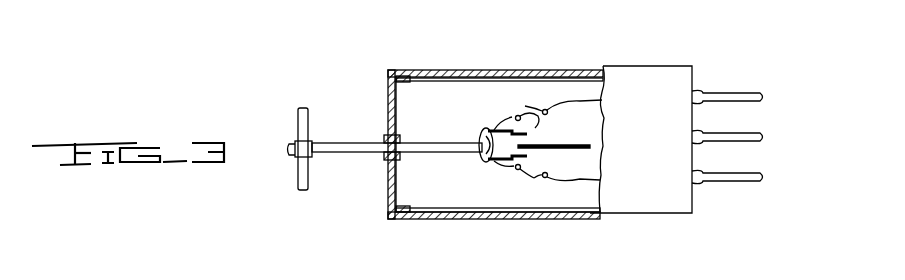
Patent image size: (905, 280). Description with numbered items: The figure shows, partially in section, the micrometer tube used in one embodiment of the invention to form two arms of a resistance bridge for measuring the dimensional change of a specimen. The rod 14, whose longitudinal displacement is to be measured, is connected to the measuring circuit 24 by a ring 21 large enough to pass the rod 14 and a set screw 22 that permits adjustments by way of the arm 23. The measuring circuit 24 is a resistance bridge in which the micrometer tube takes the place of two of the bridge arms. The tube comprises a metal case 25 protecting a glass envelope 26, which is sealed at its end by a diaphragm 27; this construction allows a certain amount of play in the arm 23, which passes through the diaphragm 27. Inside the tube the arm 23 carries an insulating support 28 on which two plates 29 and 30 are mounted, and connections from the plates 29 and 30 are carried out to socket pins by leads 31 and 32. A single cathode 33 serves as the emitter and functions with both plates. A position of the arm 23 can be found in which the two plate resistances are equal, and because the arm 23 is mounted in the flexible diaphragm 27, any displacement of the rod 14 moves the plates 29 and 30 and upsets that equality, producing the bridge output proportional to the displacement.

The rod 14 is at (309, 112).
The ring 21 is at (300, 158).
The set screw 22 is at (288, 149).
The arm 23 is at (345, 147).
The measuring circuit 24 is at (548, 70).
The metal case 25 is at (517, 221).
The glass envelope 26 is at (455, 221).
The diaphragm 27 is at (390, 184).
The insulating support 28 is at (480, 136).
The plate 29 is at (527, 133).
The plate 30 is at (527, 157).
The lead 31 is at (525, 106).
The lead 32 is at (534, 178).
The cathode 33 is at (600, 148).